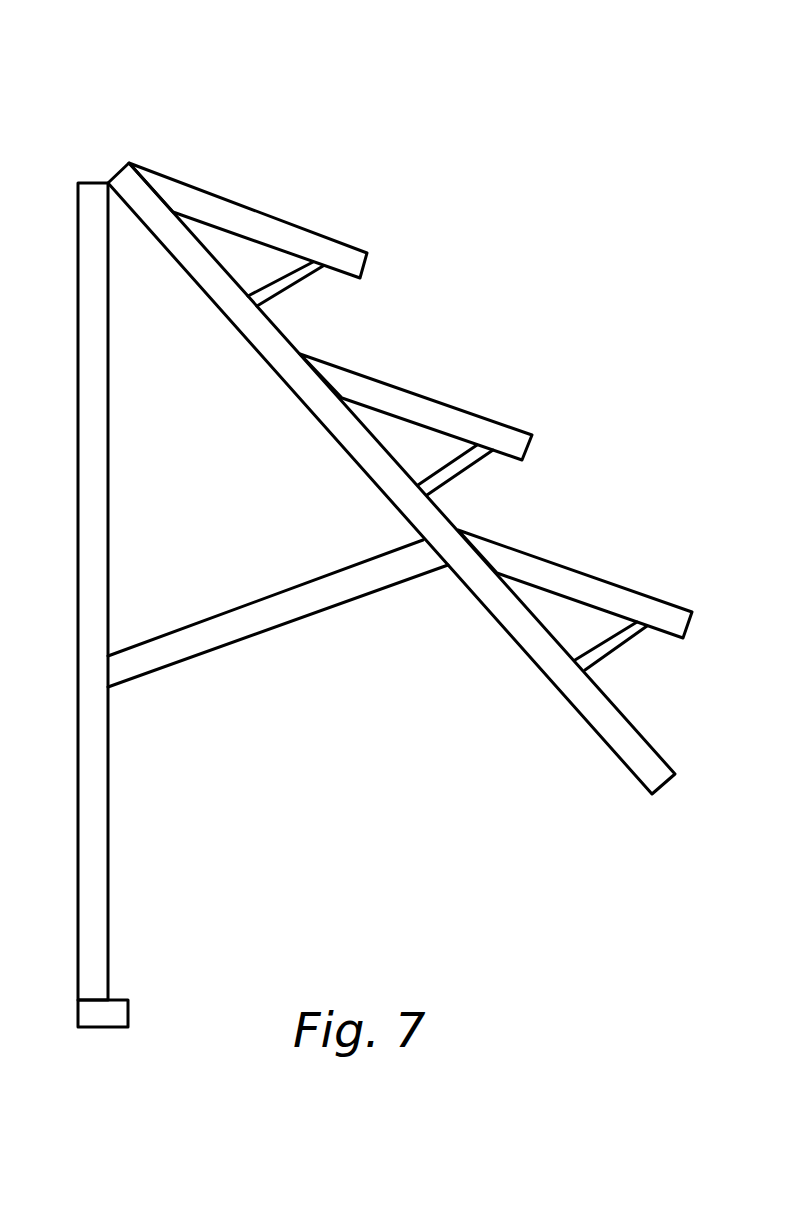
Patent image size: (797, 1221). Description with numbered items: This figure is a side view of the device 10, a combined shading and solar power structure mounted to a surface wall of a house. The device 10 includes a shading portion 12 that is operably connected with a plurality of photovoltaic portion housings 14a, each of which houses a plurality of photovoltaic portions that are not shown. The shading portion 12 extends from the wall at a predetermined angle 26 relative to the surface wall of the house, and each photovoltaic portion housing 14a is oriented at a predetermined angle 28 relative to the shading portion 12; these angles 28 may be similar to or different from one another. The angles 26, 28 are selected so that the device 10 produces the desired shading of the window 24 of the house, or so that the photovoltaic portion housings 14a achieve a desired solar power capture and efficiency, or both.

The device 10 is at (75, 96).
The shading portion 12 is at (283, 330).
The photovoltaic portion housing 14a is at (278, 218).
The window 24 is at (108, 795).
The predetermined angle 26 is at (212, 355).
The predetermined angles 28 is at (263, 256).